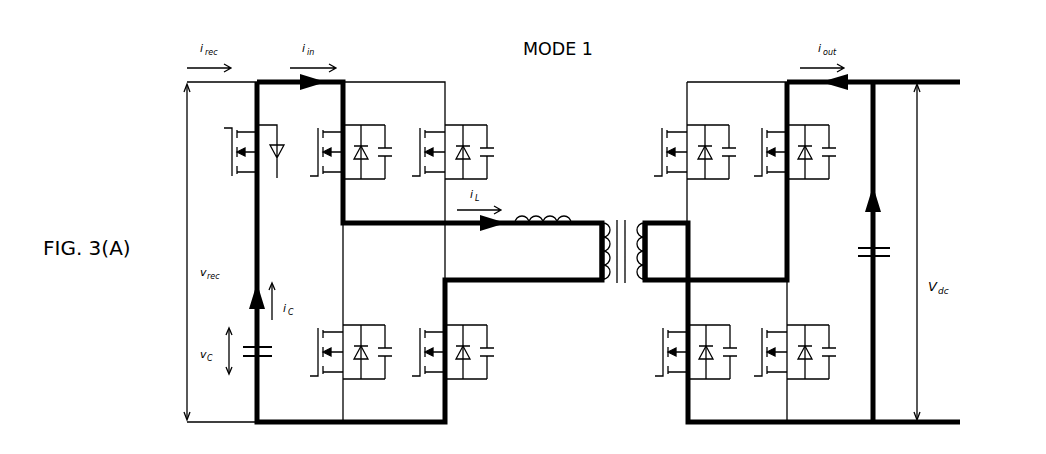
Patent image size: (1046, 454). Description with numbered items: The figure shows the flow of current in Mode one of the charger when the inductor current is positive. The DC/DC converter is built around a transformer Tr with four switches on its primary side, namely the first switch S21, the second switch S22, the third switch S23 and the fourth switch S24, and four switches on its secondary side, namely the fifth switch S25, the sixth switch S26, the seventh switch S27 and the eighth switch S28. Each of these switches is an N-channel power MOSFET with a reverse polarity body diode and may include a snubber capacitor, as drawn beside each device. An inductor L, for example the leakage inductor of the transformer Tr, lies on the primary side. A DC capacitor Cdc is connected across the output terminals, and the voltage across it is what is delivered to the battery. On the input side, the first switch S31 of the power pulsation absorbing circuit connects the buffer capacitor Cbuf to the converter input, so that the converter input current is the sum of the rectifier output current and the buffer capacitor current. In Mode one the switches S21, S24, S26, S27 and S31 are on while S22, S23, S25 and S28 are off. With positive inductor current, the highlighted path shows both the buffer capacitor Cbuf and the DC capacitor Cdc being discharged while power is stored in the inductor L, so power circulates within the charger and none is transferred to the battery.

The first switch S31 is at (254, 160).
The first switch S21 is at (351, 160).
The second switch S22 is at (351, 360).
The third switch S23 is at (453, 160).
The fourth switch S24 is at (453, 360).
The fifth switch S25 is at (695, 160).
The sixth switch S26 is at (696, 360).
The seventh switch S27 is at (795, 160).
The eighth switch S28 is at (795, 360).
The inductor L is at (543, 227).
The transformer Tr is at (623, 261).
The buffer capacitor Cbuf is at (265, 362).
The DC capacitor Cdc is at (869, 263).